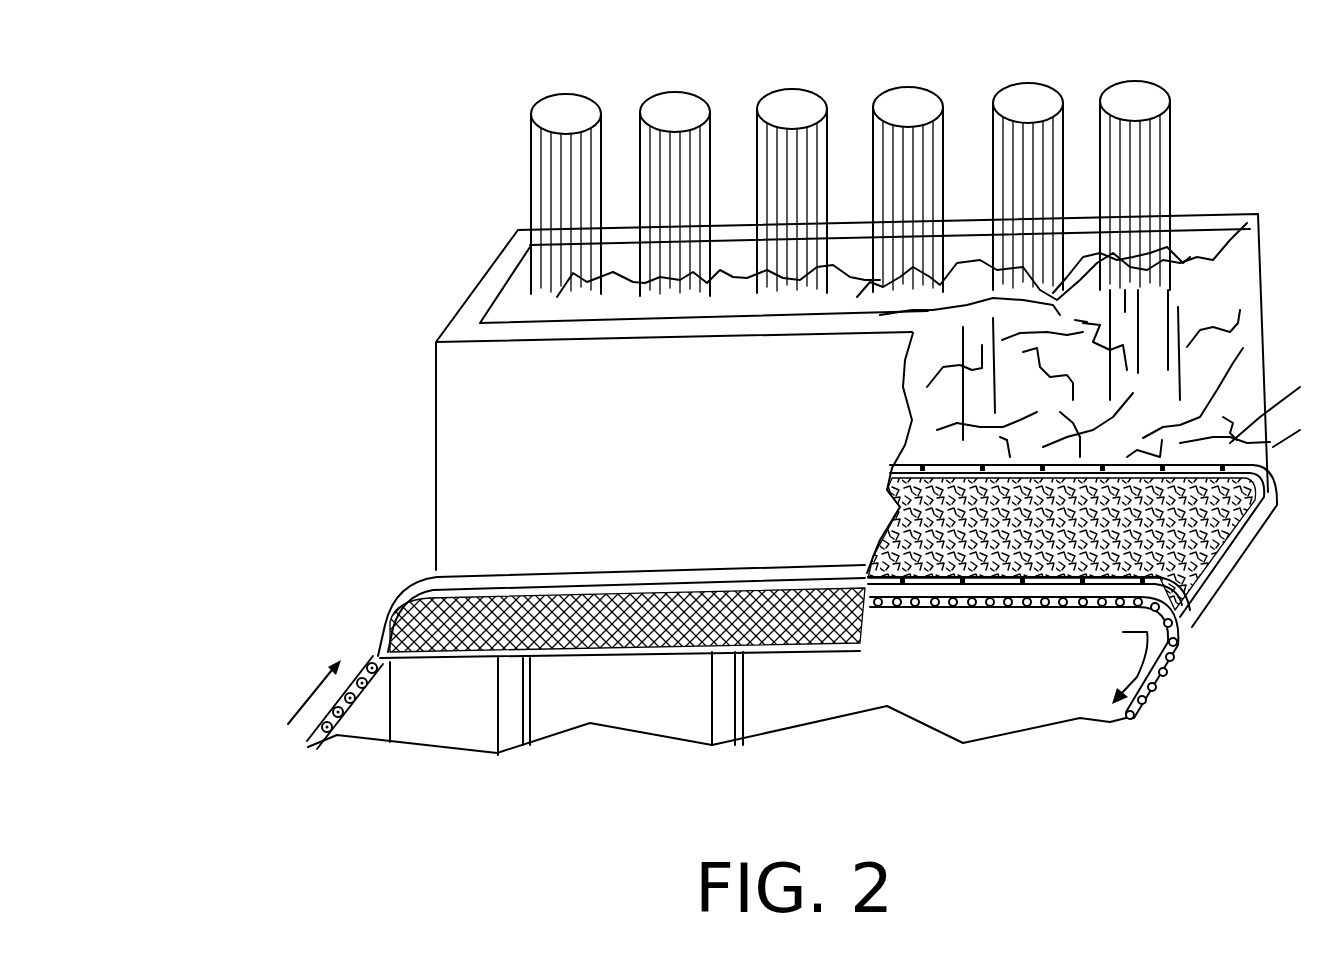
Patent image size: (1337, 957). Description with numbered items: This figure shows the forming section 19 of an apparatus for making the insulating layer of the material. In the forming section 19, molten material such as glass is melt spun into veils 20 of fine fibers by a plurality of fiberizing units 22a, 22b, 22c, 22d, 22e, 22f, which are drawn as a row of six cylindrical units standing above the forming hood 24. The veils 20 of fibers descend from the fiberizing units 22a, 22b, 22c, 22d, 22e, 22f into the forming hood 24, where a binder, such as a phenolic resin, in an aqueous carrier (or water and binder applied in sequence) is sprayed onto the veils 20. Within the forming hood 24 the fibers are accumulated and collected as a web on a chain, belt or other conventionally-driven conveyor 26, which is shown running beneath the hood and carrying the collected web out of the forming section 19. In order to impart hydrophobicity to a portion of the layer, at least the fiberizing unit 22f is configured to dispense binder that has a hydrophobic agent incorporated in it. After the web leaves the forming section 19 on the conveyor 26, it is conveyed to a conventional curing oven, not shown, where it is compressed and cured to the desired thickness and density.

The forming section 19 is at (298, 104).
The veils 20 is at (517, 195).
The fiberizing unit 22a is at (543, 97).
The fiberizing unit 22b is at (658, 90).
The fiberizing unit 22c is at (800, 90).
The fiberizing unit 22d is at (922, 83).
The fiberizing unit 22e is at (1042, 83).
The fiberizing unit 22f is at (1153, 83).
The forming hood 24 is at (435, 425).
The conveyor 26 is at (1033, 614).